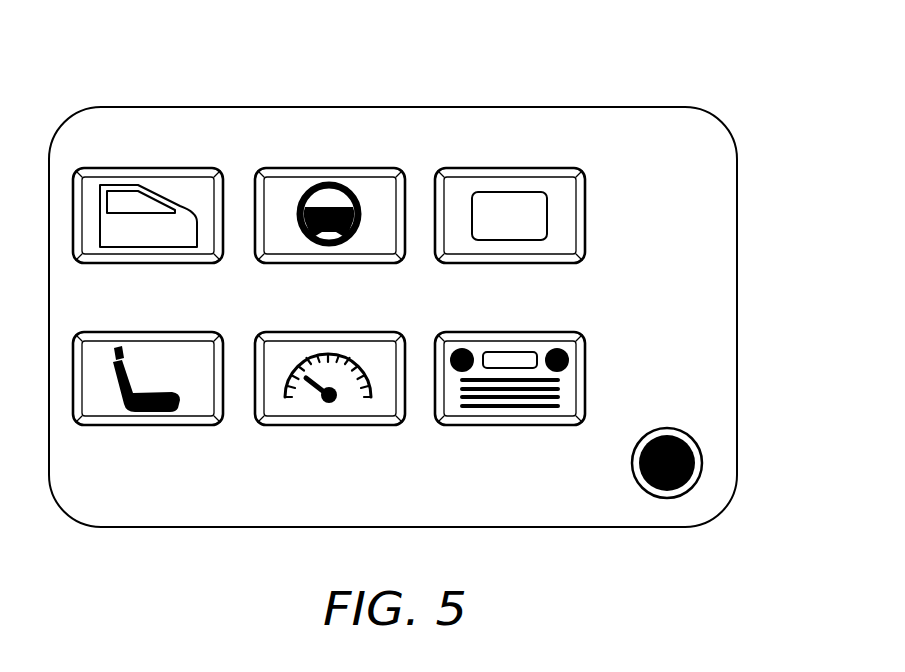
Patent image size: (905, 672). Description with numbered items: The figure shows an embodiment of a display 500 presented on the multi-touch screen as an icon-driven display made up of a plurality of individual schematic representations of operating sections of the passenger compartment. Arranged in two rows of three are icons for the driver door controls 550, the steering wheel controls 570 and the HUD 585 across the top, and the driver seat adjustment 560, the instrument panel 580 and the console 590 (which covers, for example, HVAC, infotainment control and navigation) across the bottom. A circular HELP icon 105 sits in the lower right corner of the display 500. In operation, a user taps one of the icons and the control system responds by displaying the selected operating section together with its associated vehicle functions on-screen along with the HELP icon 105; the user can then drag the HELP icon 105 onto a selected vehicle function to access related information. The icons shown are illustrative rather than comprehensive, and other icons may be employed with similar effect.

The display 500 is at (498, 106).
The driver door controls 550 is at (127, 166).
The steering wheel controls 570 is at (328, 165).
The HUD 585 is at (517, 165).
The driver seat adjustment 560 is at (127, 330).
The instrument panel 580 is at (328, 330).
The console 590 is at (515, 330).
The HELP icon 105 is at (633, 463).